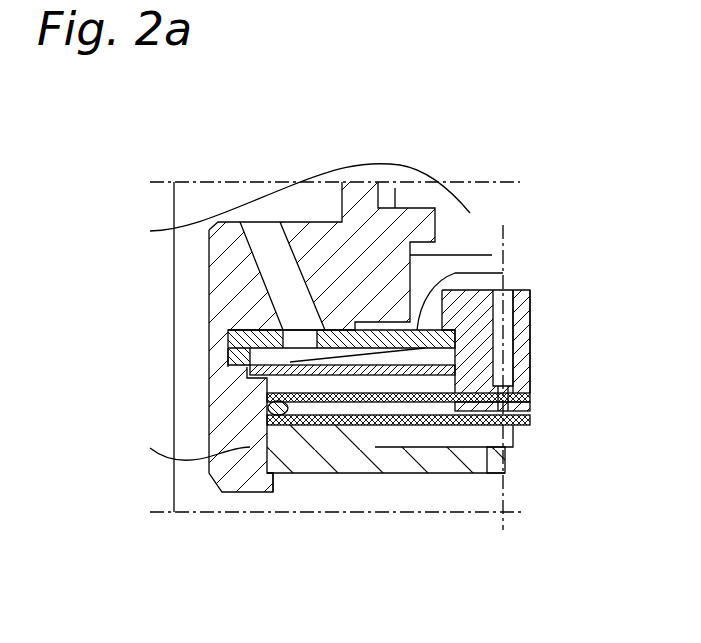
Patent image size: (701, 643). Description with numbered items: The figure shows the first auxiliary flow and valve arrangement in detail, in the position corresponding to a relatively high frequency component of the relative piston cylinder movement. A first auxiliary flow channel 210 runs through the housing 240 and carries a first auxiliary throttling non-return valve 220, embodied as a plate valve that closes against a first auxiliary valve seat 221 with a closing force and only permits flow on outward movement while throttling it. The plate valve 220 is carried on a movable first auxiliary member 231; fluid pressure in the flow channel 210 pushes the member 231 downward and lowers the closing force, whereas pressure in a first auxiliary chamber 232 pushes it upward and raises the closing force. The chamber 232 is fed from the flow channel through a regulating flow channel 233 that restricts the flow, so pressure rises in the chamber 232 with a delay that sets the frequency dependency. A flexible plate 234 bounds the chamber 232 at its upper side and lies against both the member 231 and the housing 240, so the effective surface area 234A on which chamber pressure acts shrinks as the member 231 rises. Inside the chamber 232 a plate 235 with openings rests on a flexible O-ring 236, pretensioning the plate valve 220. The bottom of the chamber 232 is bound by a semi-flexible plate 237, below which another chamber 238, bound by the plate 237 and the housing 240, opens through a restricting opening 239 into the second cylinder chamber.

The first auxiliary flow channel 210 is at (272, 253).
The first auxiliary throttling non-return valve 220 is at (503, 273).
The first auxiliary valve seat 221 is at (337, 328).
The movable first auxiliary member 231 is at (513, 310).
The first auxiliary chamber 232 is at (413, 380).
The regulating flow channel 233 is at (513, 338).
The flexible plate 234 is at (336, 378).
The effective surface area 234A is at (372, 377).
The plate 235 is at (288, 406).
The O-ring 236 is at (270, 478).
The plate 237 is at (443, 447).
The chamber 238 is at (513, 437).
The opening 239 is at (497, 463).
The housing 240 is at (217, 420).